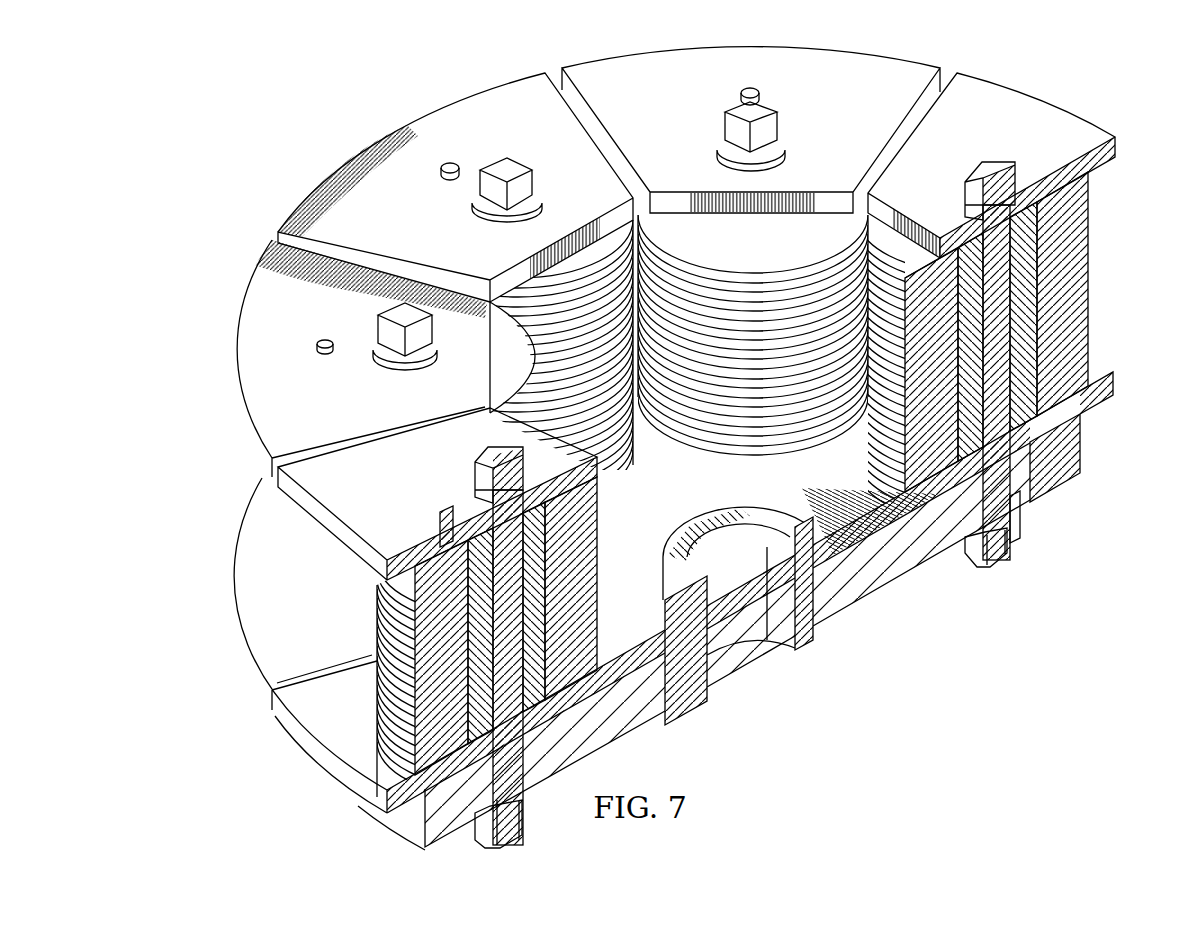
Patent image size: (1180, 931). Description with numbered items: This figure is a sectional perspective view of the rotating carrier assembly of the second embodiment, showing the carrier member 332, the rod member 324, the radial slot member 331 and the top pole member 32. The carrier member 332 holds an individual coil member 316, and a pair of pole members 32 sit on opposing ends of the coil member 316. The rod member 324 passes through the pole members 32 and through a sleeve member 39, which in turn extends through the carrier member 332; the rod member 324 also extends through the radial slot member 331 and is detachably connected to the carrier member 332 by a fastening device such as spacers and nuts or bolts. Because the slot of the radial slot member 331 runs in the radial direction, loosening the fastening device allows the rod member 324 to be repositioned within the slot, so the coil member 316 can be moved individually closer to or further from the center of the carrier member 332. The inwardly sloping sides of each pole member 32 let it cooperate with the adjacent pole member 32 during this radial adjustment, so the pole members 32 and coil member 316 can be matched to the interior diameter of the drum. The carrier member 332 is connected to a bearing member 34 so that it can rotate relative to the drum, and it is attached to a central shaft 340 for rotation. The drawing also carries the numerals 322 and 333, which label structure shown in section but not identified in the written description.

The pole member 32 is at (428, 114).
The carrier member 332 is at (510, 170).
The positioning pin 333 is at (317, 347).
The sleeve member 39 is at (482, 535).
The coil member 316 is at (1088, 250).
The intermediate plate 322 is at (1113, 378).
The radial slot member 331 is at (1023, 494).
The rod member 324 is at (990, 565).
The bearing member 34 is at (812, 636).
The central shaft 340 is at (748, 638).